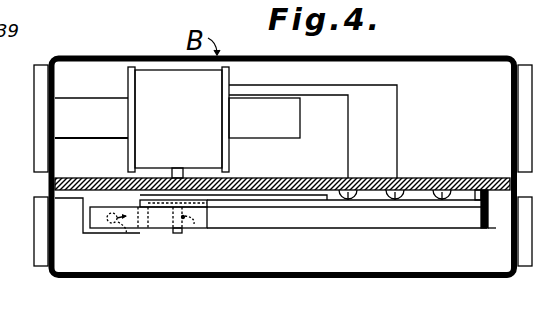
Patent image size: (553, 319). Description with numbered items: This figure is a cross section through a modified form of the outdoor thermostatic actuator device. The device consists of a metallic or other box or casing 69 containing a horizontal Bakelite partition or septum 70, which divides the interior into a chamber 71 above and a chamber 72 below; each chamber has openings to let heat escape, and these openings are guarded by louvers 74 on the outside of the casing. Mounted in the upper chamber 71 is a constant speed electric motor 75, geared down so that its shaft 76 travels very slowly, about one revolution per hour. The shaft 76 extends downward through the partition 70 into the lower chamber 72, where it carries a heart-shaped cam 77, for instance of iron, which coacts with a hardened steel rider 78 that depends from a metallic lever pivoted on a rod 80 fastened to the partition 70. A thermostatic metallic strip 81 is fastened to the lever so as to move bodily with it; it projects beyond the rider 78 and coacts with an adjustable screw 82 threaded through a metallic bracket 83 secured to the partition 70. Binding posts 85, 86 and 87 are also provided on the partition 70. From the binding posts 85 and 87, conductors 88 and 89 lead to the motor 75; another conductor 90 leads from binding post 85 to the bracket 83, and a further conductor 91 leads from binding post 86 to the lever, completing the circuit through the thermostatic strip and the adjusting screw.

The box or casing 69 is at (452, 276).
The louvers 74 is at (523, 66).
The constant speed electric motor 75 is at (178, 119).
The shaft 76 is at (184, 172).
The conductor 88 is at (348, 146).
The conductor 89 is at (398, 131).
The chamber 71 is at (452, 120).
The horizontal partition or septum 70 is at (418, 180).
The chamber 72 is at (405, 230).
The metallic bracket 83 is at (78, 236).
The adjustable screw 82 is at (125, 234).
The heart-shaped cam 77 is at (149, 233).
The hardened steel rider 78 is at (190, 233).
The thermostatic metallic strip 81 is at (292, 210).
The conductor 90 is at (340, 196).
The binding post 85 is at (356, 200).
The binding post 87 is at (401, 200).
The binding post 86 is at (447, 201).
The rod 80 is at (489, 230).
The conductor 91 is at (477, 193).